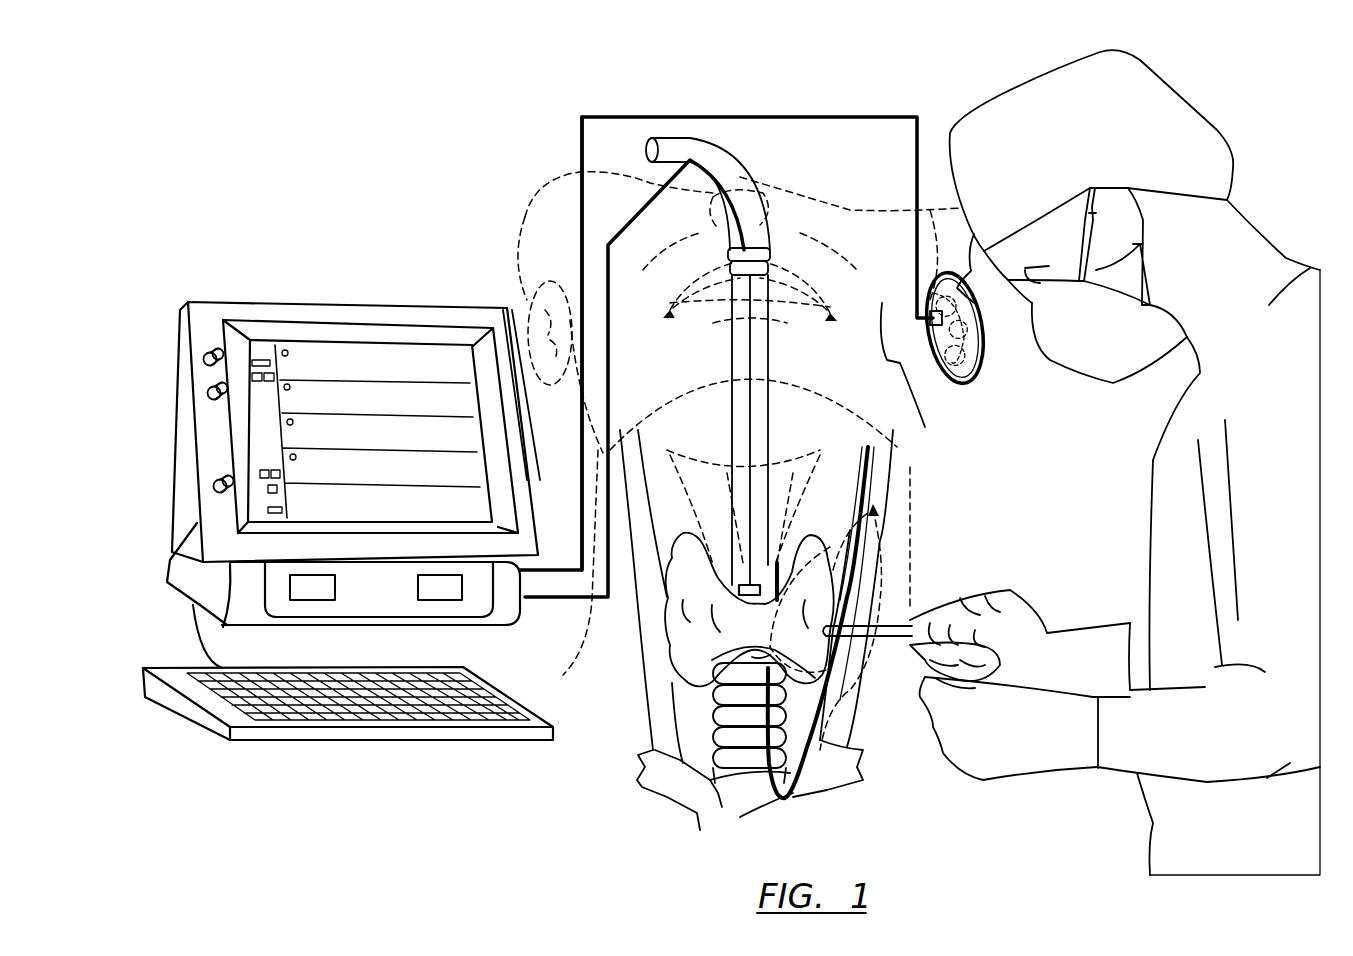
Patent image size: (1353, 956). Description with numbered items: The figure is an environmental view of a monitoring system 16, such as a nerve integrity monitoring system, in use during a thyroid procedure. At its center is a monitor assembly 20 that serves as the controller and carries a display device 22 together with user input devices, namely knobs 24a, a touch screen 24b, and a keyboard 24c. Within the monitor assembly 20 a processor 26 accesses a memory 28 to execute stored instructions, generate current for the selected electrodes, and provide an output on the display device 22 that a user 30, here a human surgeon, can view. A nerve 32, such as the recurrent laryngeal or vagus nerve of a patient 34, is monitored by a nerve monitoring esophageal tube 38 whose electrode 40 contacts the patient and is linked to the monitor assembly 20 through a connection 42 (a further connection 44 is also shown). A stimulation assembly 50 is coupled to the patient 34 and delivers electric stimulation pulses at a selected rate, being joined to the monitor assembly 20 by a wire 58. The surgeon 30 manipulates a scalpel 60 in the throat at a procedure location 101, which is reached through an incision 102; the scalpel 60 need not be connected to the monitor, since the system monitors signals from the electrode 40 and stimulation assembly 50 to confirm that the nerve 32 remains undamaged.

The monitoring system 16 is at (415, 192).
The monitor assembly 20 is at (315, 268).
The display device 22 is at (363, 360).
The knobs 24a is at (210, 350).
The touch screen 24b is at (270, 437).
The keyboard 24c is at (418, 740).
The processor 26 is at (290, 600).
The memory 28 is at (418, 600).
The user 30 is at (1144, 545).
The nerve 32 is at (862, 553).
The patient 34 is at (912, 467).
The nerve monitoring esophageal tube 38 is at (727, 165).
The electrode 40 is at (739, 592).
The connection 42 is at (608, 282).
The cable 44 is at (578, 158).
The stimulation assembly 50 is at (983, 327).
The wire 58 is at (872, 118).
The scalpel 60 is at (883, 613).
The procedure location 101 is at (740, 647).
The incision 102 is at (863, 680).